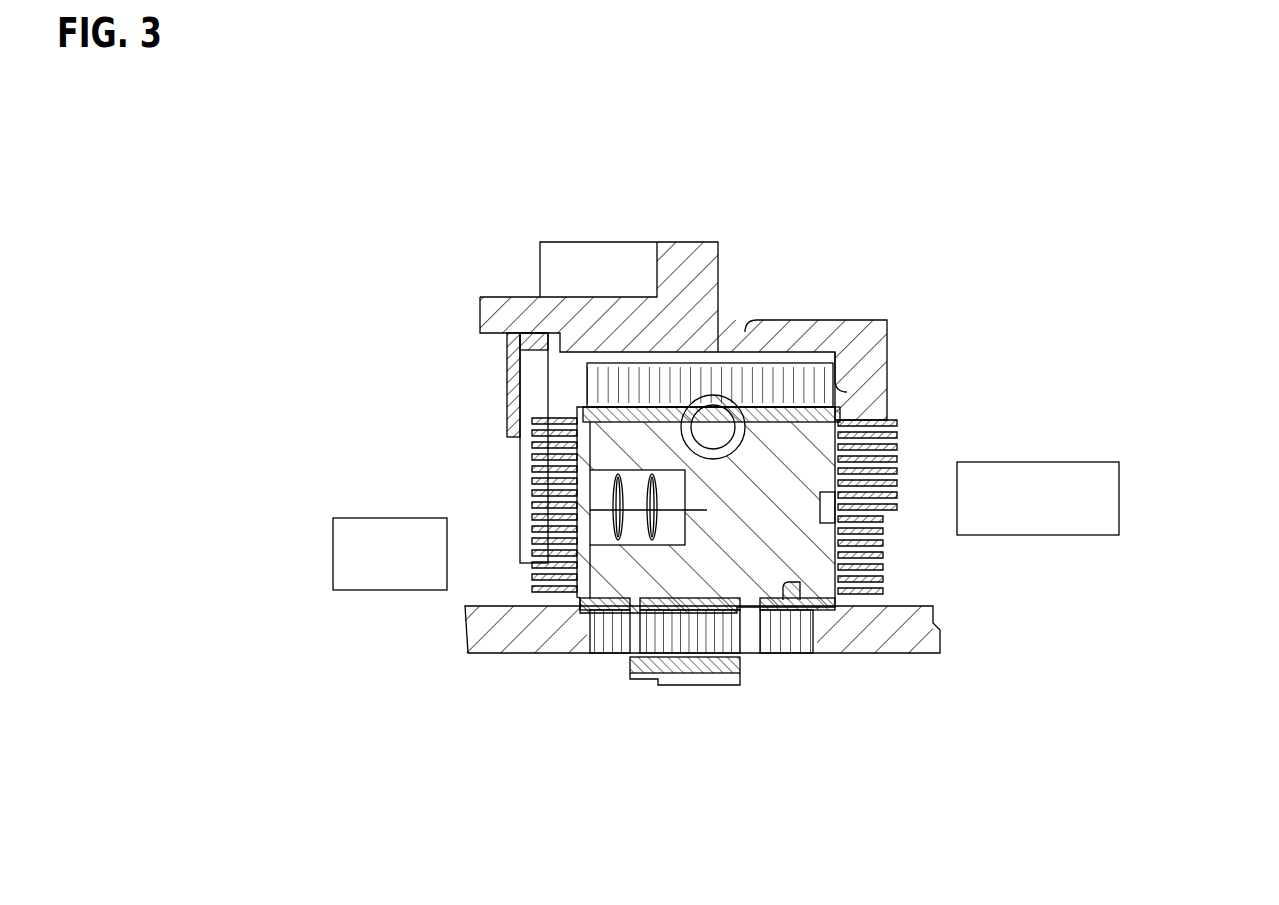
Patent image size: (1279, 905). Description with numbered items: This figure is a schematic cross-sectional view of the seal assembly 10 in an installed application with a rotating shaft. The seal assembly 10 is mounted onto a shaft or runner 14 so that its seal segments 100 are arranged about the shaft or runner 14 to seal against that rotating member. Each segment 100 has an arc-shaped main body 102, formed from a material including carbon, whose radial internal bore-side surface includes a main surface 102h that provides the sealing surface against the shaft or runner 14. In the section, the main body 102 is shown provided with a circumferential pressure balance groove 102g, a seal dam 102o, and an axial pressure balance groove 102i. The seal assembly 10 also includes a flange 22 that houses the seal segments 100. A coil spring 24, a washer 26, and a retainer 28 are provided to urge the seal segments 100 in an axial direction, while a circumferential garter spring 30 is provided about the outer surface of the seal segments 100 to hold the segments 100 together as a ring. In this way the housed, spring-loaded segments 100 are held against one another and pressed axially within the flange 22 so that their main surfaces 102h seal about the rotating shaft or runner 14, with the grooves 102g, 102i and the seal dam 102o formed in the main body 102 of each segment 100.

The seal assembly 10 is at (463, 90).
The shaft or runner 14 is at (427, 780).
The flange 22 is at (918, 147).
The coil spring 24 is at (587, 788).
The washer 26 is at (556, 147).
The retainer 28 is at (527, 345).
The garter spring 30 is at (696, 117).
The segment 100 is at (735, 778).
The main body 102 is at (890, 573).
The axial pressure balance groove 102i is at (1126, 142).
The seal dam 102o is at (1143, 685).
The main surface 102h is at (800, 590).
The circumferential pressure balance groove 102g is at (813, 592).